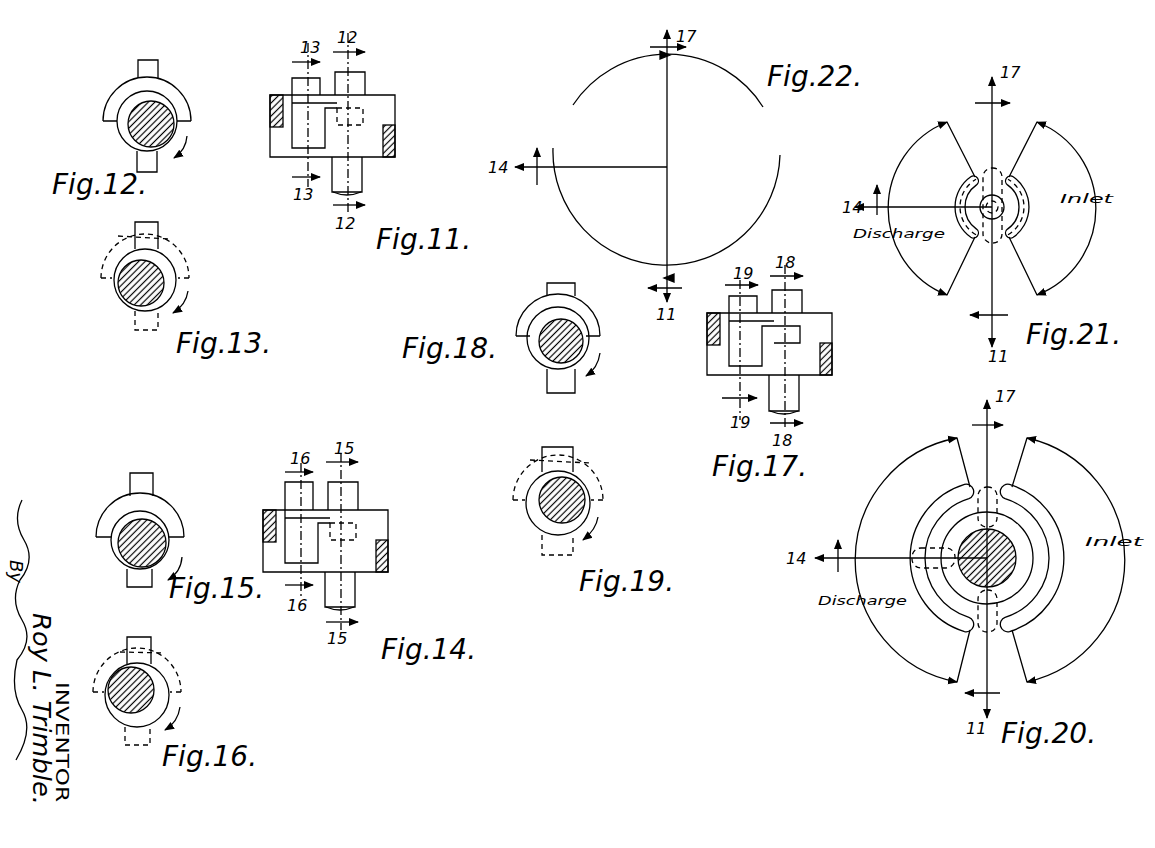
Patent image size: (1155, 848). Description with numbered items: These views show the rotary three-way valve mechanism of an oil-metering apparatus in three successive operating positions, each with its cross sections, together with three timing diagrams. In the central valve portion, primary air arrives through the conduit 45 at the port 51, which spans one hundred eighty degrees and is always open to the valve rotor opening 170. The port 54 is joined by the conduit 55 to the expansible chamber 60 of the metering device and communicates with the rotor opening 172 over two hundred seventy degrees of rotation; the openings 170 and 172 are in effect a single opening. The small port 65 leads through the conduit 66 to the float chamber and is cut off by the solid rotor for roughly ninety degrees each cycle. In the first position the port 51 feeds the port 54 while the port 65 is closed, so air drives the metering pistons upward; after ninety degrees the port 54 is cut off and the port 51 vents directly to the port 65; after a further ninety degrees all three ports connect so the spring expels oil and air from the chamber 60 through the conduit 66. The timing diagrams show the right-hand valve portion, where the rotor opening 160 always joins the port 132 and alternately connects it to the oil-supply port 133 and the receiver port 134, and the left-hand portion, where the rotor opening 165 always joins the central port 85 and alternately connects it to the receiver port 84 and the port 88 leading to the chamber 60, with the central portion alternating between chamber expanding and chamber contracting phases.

In FIG. 12, the conduit 45 is at (158, 68).
In FIG. 11, the conduit 45 is at (365, 83).
In FIG. 18, the conduit 45 is at (547, 292).
In FIG. 17, the conduit 45 is at (798, 300).
In FIG. 15, the conduit 45 is at (130, 488).
In FIG. 14, the conduit 45 is at (358, 491).
In FIG. 12, the port 51 is at (172, 96).
In FIG. 11, the port 51 is at (355, 98).
In FIG. 13, the port 51 is at (101, 262).
In FIG. 18, the port 51 is at (583, 319).
In FIG. 17, the port 51 is at (807, 310).
In FIG. 15, the port 51 is at (163, 521).
In FIG. 14, the port 51 is at (348, 506).
In FIG. 19, the port 51 is at (592, 489).
In FIG. 16, the port 51 is at (168, 665).
In FIG. 11, the port 54 is at (290, 95).
In FIG. 13, the port 54 is at (118, 237).
In FIG. 14, the port 54 is at (283, 510).
In FIG. 19, the port 54 is at (575, 463).
In FIG. 16, the port 54 is at (152, 661).
In FIG. 11, the conduit 55 is at (292, 84).
In FIG. 13, the conduit 55 is at (158, 233).
In FIG. 14, the conduit 55 is at (285, 497).
In FIG. 19, the conduit 55 is at (542, 457).
In FIG. 16, the conduit 55 is at (152, 649).
In FIG. 22, the expansible chamber 60 is at (664, 166).
In FIG. 12, the port 65 is at (138, 160).
In FIG. 11, the port 65 is at (362, 165).
In FIG. 18, the port 65 is at (547, 384).
In FIG. 17, the port 65 is at (799, 386).
In FIG. 15, the port 65 is at (128, 579).
In FIG. 14, the port 65 is at (355, 580).
In FIG. 11, the conduit 66 is at (362, 186).
In FIG. 17, the conduit 66 is at (799, 408).
In FIG. 14, the conduit 66 is at (355, 599).
In FIG. 21, the port 84 is at (1021, 187).
In FIG. 21, the port 85 is at (1004, 208).
In FIG. 21, the port 88 is at (959, 196).
In FIG. 20, the port 132 is at (1030, 575).
In FIG. 20, the port 133 is at (1054, 533).
In FIG. 20, the port 134 is at (929, 604).
In FIG. 20, the valve rotor opening 160 is at (998, 508).
In FIG. 21, the valve rotor opening 165 is at (951, 236).
In FIG. 12, the valve rotor opening 170 is at (132, 102).
In FIG. 18, the valve rotor opening 170 is at (541, 359).
In FIG. 15, the valve rotor opening 170 is at (152, 516).
In FIG. 13, the opening 172 is at (170, 271).
In FIG. 19, the opening 172 is at (540, 520).
In FIG. 16, the opening 172 is at (165, 685).